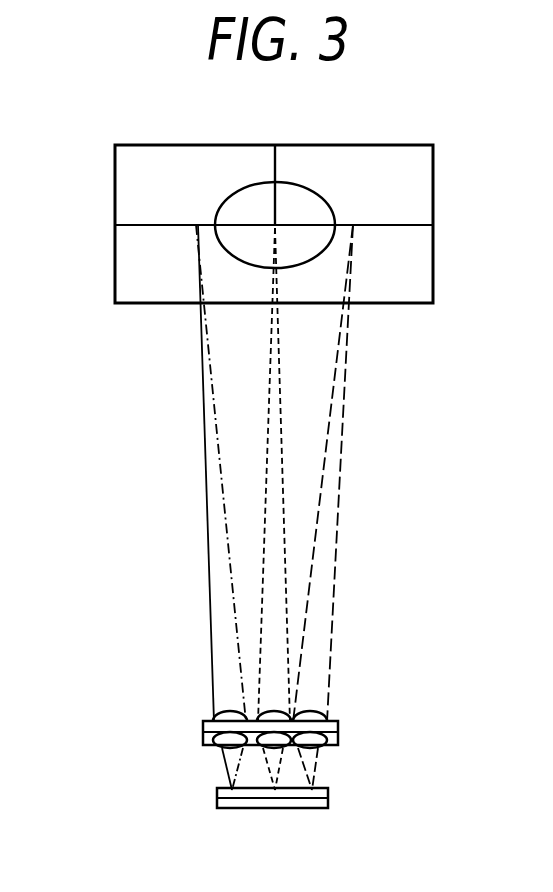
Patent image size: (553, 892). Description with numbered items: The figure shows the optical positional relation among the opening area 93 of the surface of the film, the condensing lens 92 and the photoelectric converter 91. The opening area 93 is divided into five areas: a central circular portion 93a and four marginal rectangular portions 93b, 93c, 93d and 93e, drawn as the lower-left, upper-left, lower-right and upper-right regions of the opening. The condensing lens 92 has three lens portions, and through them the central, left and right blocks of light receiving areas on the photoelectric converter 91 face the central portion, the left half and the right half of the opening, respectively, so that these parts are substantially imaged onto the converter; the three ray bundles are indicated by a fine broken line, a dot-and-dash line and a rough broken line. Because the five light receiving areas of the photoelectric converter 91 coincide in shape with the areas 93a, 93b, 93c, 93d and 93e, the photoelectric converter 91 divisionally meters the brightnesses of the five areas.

The opening area of the surface of the film 93 is at (162, 145).
The central circular portion 93a is at (305, 202).
The marginal rectangular portion 93b is at (127, 278).
The marginal rectangular portion 93c is at (127, 183).
The marginal rectangular portion 93d is at (420, 282).
The marginal rectangular portion 93e is at (420, 186).
The condensing lens 92 is at (340, 732).
The photoelectric converter 91 is at (330, 800).